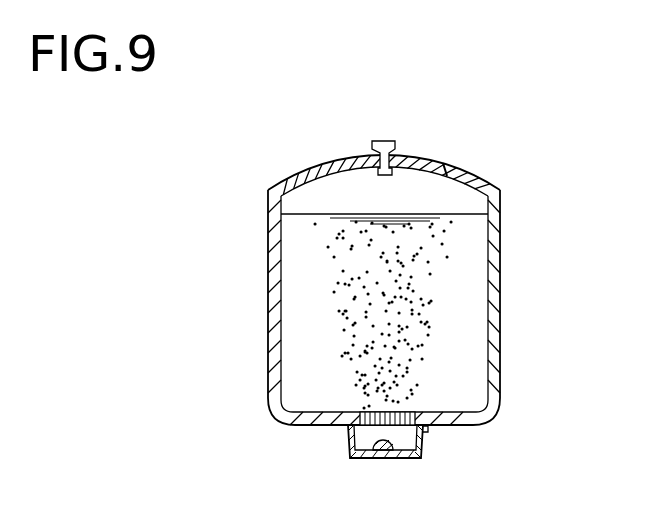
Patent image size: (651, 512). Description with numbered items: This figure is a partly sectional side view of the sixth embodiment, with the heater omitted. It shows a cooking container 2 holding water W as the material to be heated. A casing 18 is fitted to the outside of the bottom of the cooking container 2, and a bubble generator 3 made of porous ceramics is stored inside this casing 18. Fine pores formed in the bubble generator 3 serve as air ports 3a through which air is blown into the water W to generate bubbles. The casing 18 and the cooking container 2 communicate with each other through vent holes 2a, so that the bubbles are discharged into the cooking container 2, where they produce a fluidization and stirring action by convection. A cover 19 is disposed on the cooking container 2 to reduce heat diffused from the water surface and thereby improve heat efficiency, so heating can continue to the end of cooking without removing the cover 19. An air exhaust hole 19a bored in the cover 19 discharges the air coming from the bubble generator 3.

The cooking container 2 is at (502, 272).
The vent holes 2a is at (362, 410).
The bubble generator 3 is at (350, 443).
The air ports 3a is at (430, 411).
The casing 18 is at (423, 447).
The cover 19 is at (323, 165).
The air exhaust hole 19a is at (446, 166).
The water W is at (470, 349).